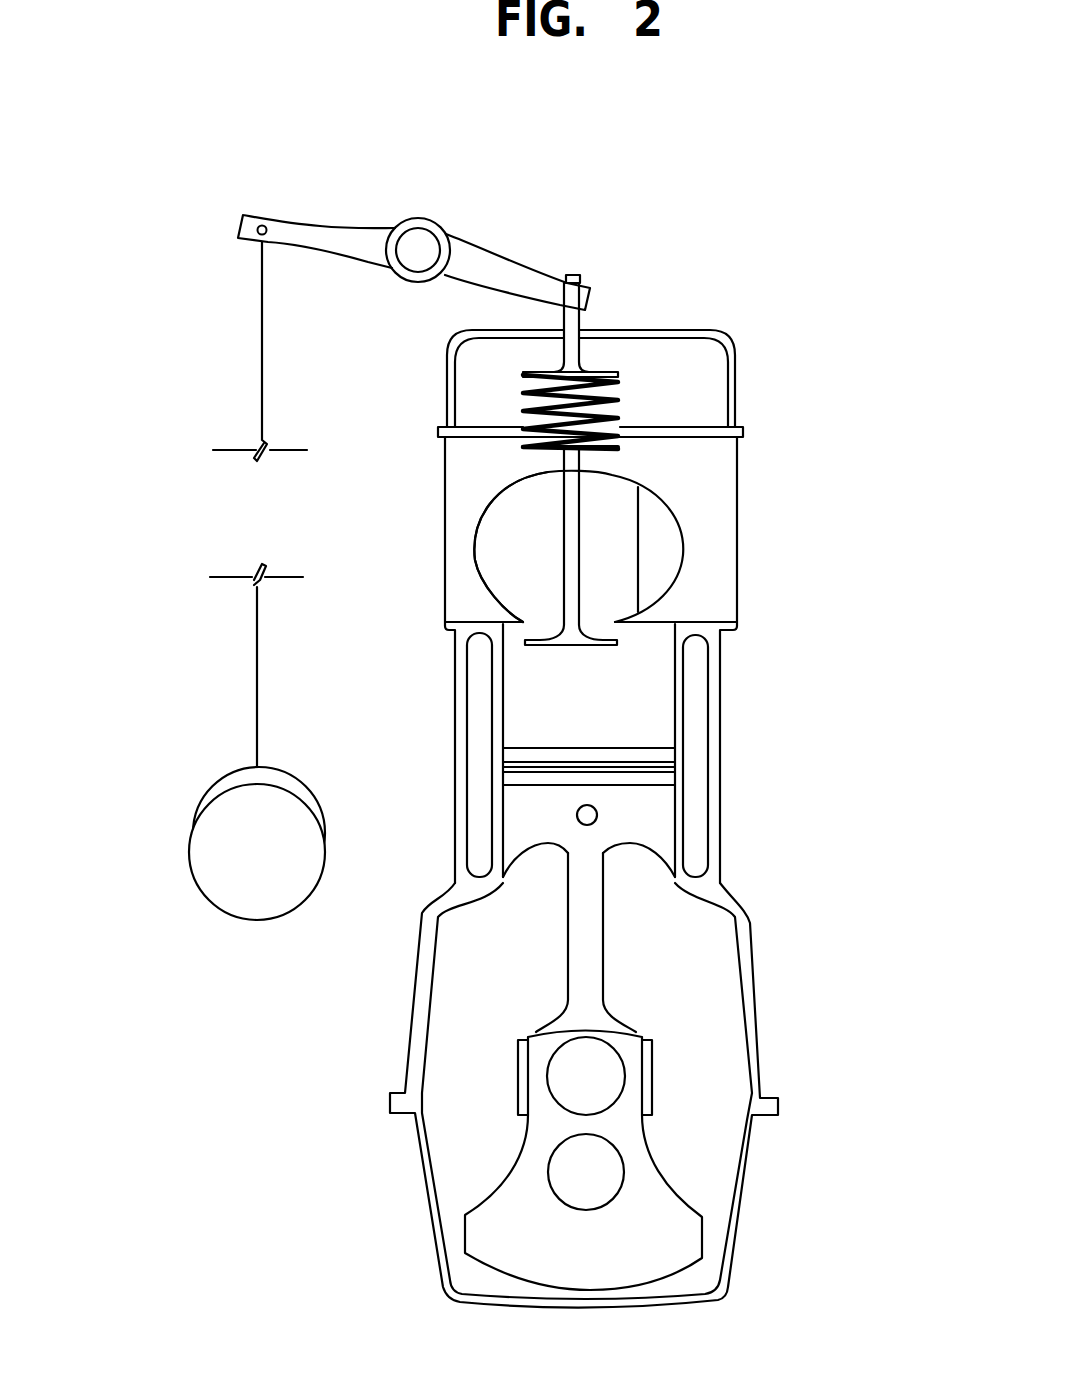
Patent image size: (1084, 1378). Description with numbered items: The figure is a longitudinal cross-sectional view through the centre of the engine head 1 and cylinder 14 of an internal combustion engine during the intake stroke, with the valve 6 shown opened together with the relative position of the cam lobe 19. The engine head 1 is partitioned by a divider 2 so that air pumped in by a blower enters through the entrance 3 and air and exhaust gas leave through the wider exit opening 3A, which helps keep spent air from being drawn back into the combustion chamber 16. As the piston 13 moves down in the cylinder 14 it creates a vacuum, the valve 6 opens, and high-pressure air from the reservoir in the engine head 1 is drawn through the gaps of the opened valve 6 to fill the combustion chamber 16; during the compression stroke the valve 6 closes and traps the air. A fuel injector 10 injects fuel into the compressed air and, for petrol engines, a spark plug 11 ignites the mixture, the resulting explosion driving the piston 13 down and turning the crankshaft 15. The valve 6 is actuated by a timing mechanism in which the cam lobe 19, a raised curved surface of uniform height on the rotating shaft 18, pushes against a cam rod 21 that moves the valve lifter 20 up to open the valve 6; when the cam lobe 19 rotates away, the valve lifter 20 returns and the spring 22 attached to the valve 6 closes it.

The engine head 1 is at (727, 338).
The divider 2 is at (640, 516).
The entrance 3 is at (663, 557).
The exit opening 3A is at (513, 528).
The valve 6 is at (528, 643).
The fuel injector 10 is at (647, 633).
The spark plug 11 is at (520, 618).
The piston 13 is at (638, 828).
The cylinder 14 is at (720, 695).
The crankshaft 15 is at (603, 1162).
The combustion chamber 16 is at (623, 732).
The shaft 18 is at (217, 862).
The cam lobe 19 is at (232, 781).
The valve lifter 20 is at (243, 240).
The cam rod 21 is at (257, 703).
The spring 22 is at (620, 423).